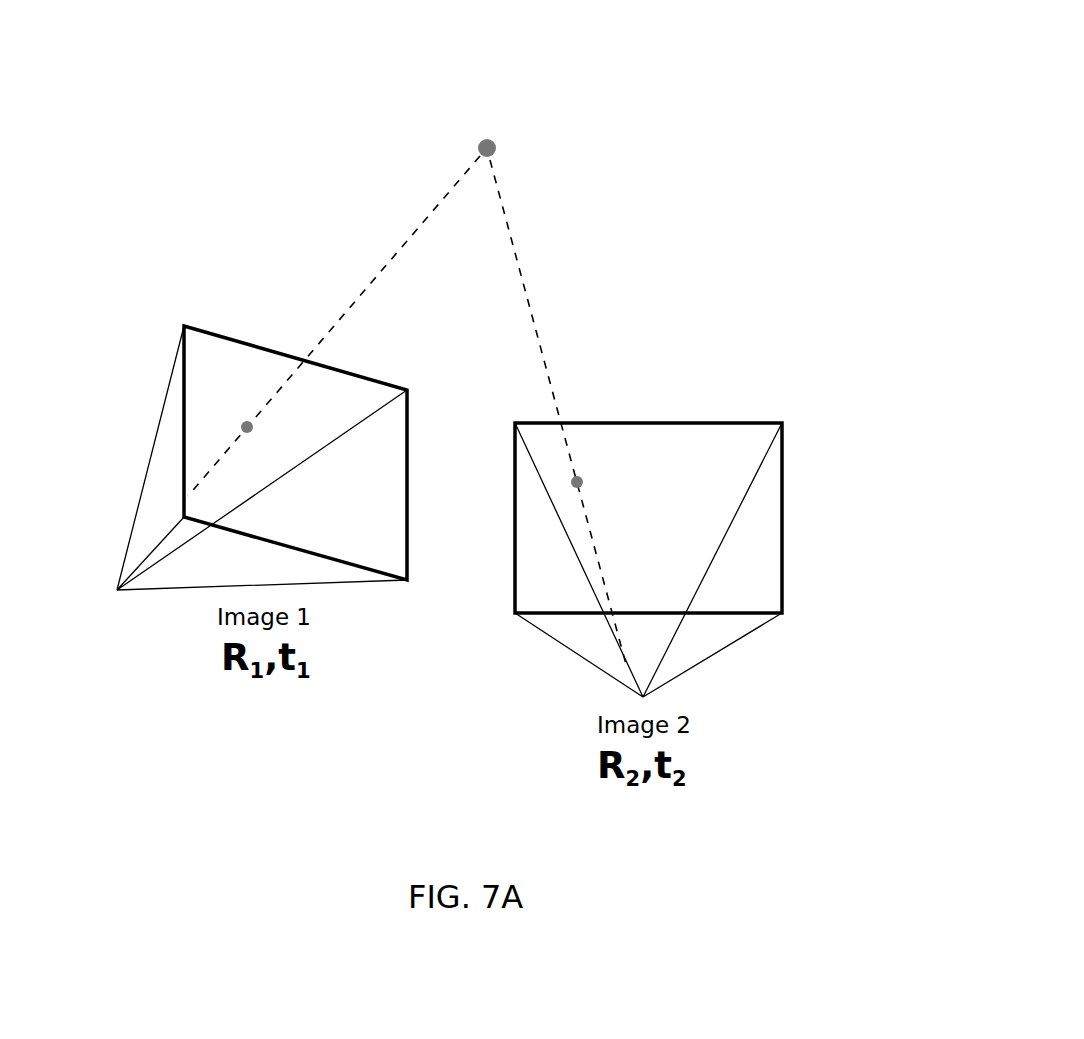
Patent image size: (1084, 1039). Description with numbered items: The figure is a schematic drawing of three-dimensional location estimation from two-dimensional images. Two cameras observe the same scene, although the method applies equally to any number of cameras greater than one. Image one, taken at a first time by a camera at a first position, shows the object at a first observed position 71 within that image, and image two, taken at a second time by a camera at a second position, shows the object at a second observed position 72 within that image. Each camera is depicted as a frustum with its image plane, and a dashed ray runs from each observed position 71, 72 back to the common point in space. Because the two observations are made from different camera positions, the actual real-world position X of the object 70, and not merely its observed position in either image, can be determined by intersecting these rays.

The object 70 is at (500, 152).
The object position in image 1 71 is at (246, 411).
The object position in image 2 72 is at (591, 488).